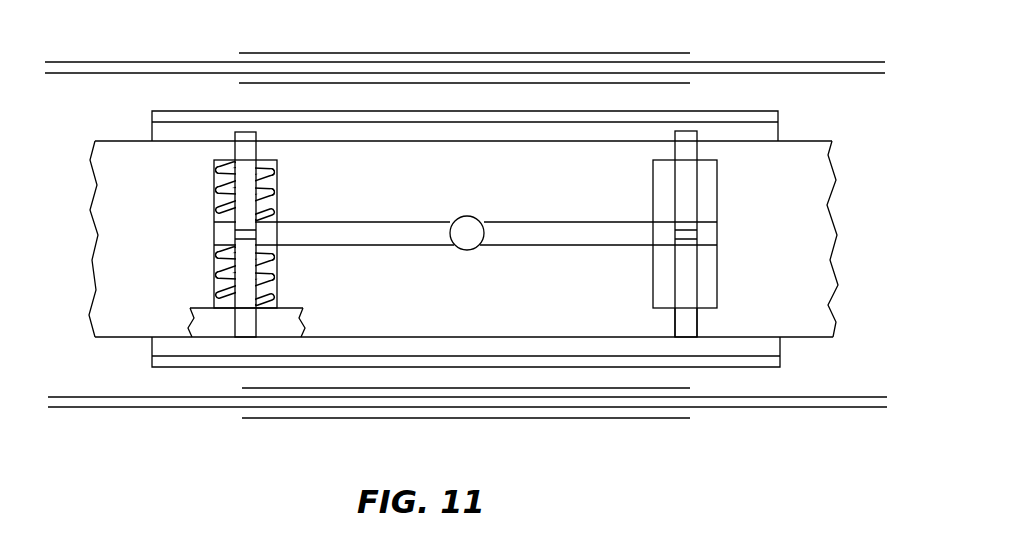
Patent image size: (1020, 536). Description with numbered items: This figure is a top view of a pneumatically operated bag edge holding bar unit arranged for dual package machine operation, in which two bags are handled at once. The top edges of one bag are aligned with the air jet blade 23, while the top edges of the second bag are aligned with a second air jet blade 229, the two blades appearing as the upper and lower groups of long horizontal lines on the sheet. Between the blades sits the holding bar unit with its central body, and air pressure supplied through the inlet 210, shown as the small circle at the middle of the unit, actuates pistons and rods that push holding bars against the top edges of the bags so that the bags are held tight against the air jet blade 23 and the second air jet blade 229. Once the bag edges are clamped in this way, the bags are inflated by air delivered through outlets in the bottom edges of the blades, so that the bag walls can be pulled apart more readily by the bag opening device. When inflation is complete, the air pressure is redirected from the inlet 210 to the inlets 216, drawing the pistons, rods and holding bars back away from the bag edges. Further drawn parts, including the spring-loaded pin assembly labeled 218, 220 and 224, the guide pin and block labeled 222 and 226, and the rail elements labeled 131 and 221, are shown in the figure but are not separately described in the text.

The air jet blade 23 is at (812, 62).
The upper rail 131 is at (661, 53).
The inlet 210 is at (465, 240).
The inlets 216 is at (716, 206).
The compression spring 218 is at (233, 183).
The spring pin 220 is at (247, 132).
The lower rail 221 is at (667, 418).
The guide pin 222 is at (680, 131).
The base block 224 is at (248, 330).
The lower end of guide pin 226 is at (687, 329).
The second air jet blade 229 is at (840, 397).